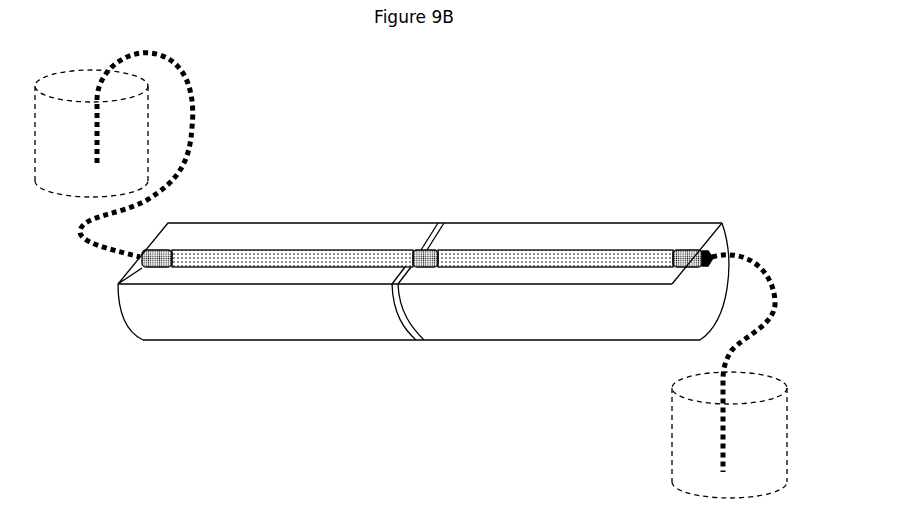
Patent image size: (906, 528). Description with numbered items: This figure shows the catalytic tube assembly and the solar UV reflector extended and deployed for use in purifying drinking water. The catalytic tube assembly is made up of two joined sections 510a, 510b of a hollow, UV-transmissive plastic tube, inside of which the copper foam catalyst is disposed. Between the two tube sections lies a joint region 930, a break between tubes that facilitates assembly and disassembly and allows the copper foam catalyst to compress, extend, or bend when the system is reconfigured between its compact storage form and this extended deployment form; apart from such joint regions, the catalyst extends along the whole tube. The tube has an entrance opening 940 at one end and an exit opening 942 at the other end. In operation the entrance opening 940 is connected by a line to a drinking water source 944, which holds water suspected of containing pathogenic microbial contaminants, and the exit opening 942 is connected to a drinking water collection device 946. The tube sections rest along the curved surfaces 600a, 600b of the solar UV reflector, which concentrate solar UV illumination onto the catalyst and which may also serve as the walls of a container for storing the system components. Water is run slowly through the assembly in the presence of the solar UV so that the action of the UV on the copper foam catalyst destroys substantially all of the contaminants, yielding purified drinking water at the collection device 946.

The catalytic tube assembly section 510a is at (283, 240).
The catalytic tube assembly section 510b is at (548, 238).
The joint region 930 is at (413, 242).
The entrance opening 940 is at (140, 268).
The exit opening 942 is at (693, 247).
The drinking water source 944 is at (68, 82).
The drinking water collection device 946 is at (682, 438).
The solar UV reflector curved surface 600a is at (323, 325).
The solar UV reflector curved surface 600b is at (542, 323).